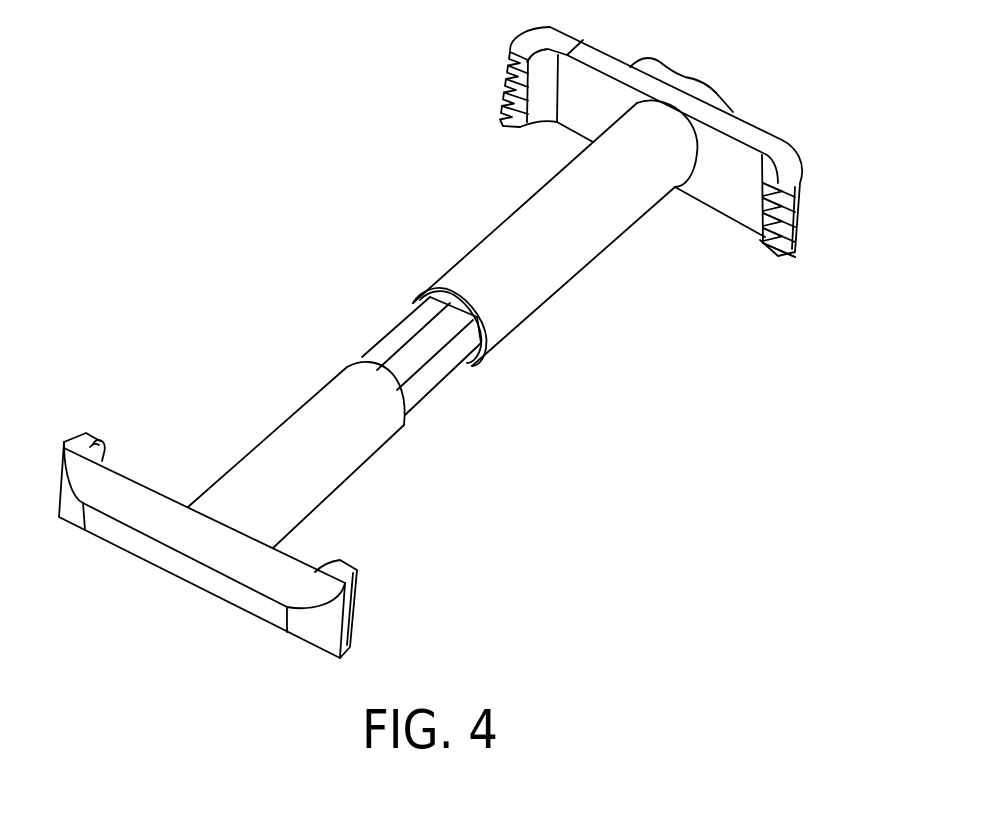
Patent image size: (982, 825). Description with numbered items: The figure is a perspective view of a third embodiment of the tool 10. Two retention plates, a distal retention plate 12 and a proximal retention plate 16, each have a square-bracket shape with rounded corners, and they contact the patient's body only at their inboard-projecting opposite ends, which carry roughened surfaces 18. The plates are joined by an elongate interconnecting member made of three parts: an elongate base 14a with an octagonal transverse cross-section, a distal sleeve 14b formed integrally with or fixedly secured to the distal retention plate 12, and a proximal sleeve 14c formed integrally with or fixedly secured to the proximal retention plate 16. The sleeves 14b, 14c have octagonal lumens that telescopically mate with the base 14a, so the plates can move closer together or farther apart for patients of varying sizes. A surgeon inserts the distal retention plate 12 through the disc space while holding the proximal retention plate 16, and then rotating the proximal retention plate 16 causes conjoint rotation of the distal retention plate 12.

The tool 10 is at (270, 193).
The distal retention plate 12 is at (174, 570).
The elongate base 14a is at (397, 325).
The distal part or sleeve 14b is at (273, 428).
The proximal part or sleeve 14c is at (480, 240).
The proximal retention plate 16 is at (753, 123).
The roughened surfaces 18 is at (503, 88).